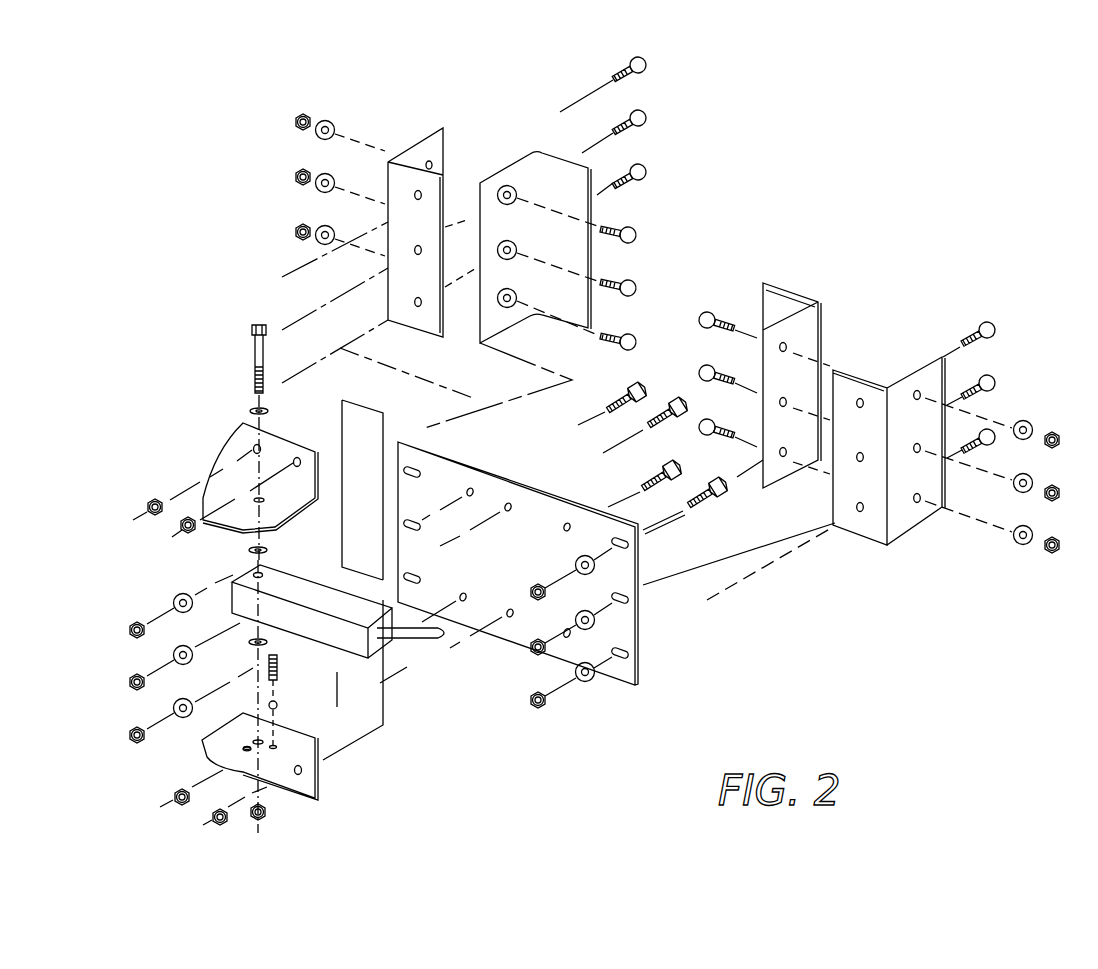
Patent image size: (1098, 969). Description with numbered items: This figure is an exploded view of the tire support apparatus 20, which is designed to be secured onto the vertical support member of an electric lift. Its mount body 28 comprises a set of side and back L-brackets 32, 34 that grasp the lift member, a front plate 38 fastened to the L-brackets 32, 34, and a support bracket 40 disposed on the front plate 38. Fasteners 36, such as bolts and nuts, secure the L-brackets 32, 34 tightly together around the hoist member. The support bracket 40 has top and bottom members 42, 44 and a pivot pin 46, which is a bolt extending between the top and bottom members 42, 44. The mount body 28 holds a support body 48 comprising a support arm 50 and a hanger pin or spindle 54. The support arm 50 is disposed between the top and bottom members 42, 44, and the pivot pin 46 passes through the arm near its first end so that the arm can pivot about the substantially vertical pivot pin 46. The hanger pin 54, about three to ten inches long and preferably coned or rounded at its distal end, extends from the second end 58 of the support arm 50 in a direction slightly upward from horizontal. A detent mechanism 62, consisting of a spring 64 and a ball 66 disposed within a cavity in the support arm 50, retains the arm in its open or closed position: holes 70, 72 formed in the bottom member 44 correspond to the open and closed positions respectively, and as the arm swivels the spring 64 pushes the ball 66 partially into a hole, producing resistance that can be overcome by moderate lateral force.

The tire support apparatus 20 is at (903, 152).
The mount body 28 is at (531, 613).
The side L-bracket 32 is at (428, 137).
The back L-bracket 34 is at (553, 155).
The fasteners 36 is at (298, 124).
The front plate 38 is at (500, 633).
The support bracket 40 is at (205, 426).
The top member 42 is at (228, 493).
The bottom member 44 is at (305, 785).
The pivot pin 46 is at (253, 355).
The support body 48 is at (393, 728).
The support arm 50 is at (327, 567).
The hanger pin 54 is at (437, 637).
The second end 58 is at (338, 621).
The detent mechanism 62 is at (261, 707).
The spring 64 is at (278, 662).
The ball 66 is at (276, 700).
The hole 70 is at (247, 748).
The hole 72 is at (285, 760).